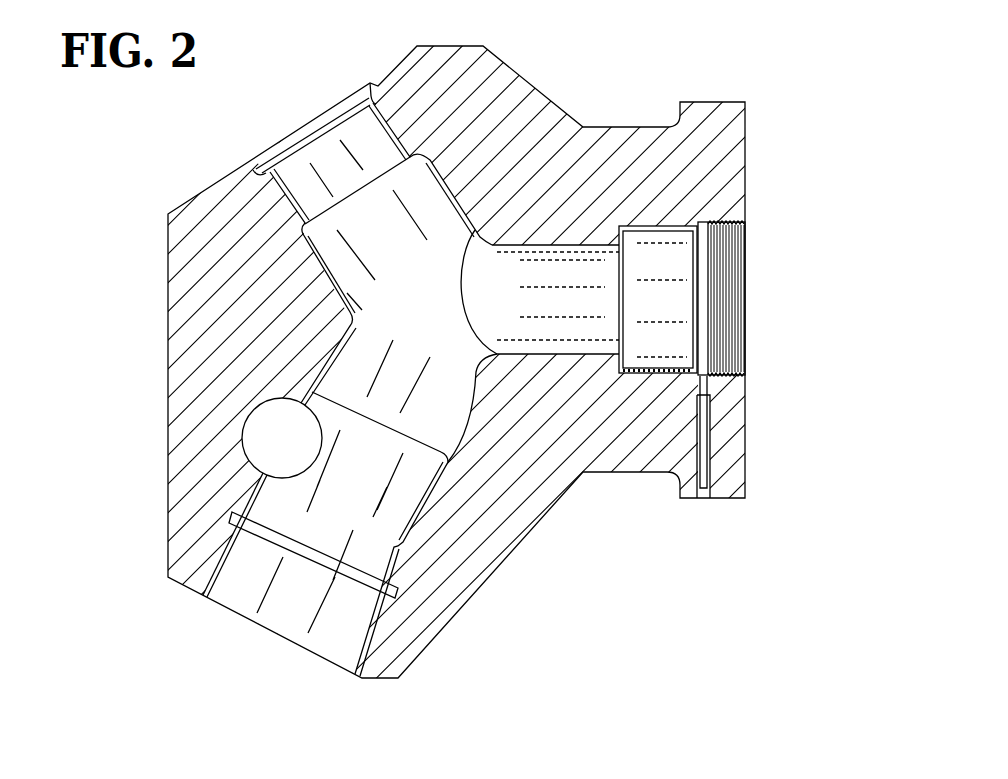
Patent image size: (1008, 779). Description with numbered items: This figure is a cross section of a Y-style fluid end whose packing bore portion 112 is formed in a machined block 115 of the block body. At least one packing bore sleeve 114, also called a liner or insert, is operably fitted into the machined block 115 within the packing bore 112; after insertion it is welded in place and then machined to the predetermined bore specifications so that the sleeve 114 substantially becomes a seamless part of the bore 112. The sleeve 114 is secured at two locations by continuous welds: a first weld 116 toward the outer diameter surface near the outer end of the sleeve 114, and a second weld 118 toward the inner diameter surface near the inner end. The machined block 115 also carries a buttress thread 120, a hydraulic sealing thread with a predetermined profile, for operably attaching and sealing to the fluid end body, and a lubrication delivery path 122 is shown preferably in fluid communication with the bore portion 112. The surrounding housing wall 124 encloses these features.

The packing bore portion 112 is at (598, 365).
The packing bore sleeve 114 is at (665, 222).
The machined block 115 is at (677, 385).
The first weld 116 is at (697, 228).
The second weld 118 is at (620, 372).
The buttress thread 120 is at (730, 363).
The lubrication delivery path 122 is at (703, 452).
The housing body 124 is at (754, 420).